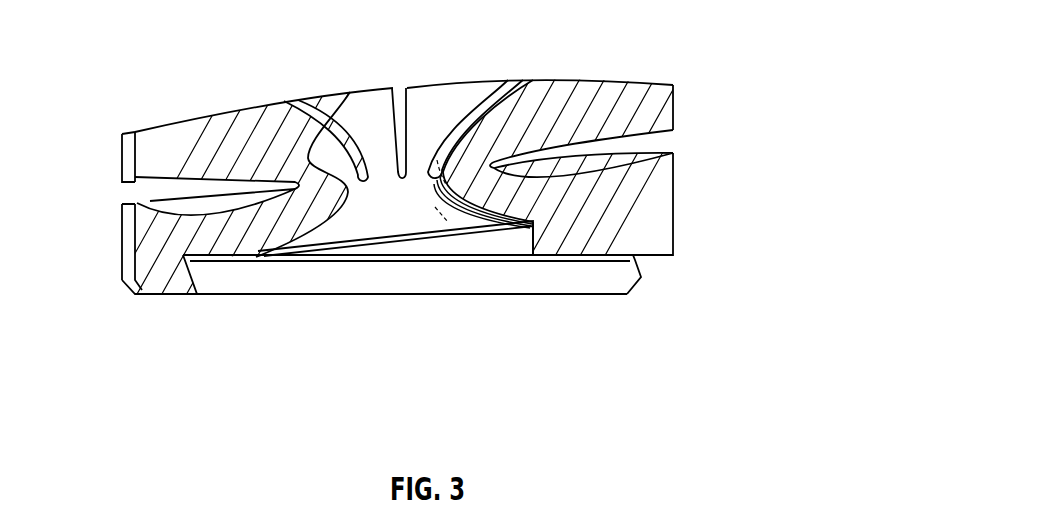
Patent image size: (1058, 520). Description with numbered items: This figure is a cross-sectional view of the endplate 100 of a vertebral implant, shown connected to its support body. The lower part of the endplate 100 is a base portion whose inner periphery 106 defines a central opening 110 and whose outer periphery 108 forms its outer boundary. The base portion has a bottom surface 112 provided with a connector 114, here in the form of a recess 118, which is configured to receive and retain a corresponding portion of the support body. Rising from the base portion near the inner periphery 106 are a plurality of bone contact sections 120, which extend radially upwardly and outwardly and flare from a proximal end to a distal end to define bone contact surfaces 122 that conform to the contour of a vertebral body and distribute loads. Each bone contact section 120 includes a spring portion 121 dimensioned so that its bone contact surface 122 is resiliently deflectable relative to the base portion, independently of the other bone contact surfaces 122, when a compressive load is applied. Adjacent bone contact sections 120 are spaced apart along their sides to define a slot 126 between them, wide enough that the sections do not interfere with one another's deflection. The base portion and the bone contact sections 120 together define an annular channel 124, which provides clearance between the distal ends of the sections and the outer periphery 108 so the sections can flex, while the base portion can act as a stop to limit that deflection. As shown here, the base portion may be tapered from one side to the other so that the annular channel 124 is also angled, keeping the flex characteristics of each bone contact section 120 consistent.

The endplate 100 is at (145, 68).
The inner periphery 106 is at (443, 185).
The outer periphery 108 is at (675, 218).
The central opening 110 is at (312, 223).
The bottom surface 112 is at (660, 258).
The connector 114 is at (198, 285).
The recess 118 is at (617, 262).
The bone contact section 120 is at (122, 172).
The spring portion 121 is at (330, 124).
The bone contact surface 122 is at (175, 122).
The annular channel 124 is at (122, 198).
The slot 126 is at (281, 101).